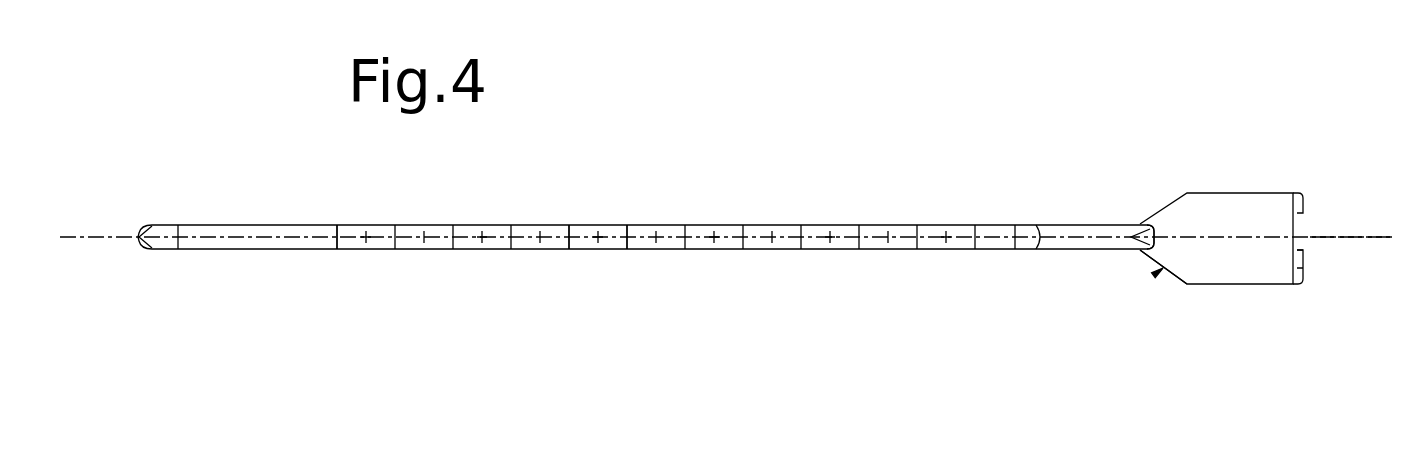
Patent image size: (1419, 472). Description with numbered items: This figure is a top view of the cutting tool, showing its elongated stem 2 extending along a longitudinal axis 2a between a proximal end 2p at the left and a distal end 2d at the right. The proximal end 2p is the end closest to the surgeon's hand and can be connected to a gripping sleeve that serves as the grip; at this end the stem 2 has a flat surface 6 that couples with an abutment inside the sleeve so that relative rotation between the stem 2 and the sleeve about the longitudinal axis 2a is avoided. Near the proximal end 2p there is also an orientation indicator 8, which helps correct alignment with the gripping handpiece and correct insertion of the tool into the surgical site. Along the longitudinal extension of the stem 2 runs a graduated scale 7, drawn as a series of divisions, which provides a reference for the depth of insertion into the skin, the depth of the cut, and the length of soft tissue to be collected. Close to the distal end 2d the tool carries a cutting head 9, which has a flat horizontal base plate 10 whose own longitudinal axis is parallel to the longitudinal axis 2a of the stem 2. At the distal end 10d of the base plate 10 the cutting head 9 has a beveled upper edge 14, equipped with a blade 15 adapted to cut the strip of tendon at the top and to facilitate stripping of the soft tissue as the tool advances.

The stem 2 is at (788, 226).
The proximal end 2p is at (141, 231).
The longitudinal axis 2a is at (1350, 236).
The distal end 2d is at (1140, 223).
The flat surface 6 is at (166, 237).
The graduated scale 7 is at (628, 237).
The orientation indicator 8 is at (317, 236).
The cutting head 9 is at (1163, 268).
The base plate 10 is at (1230, 208).
The distal end of the base plate 10d is at (1303, 250).
The beveled upper edge 14 is at (1304, 268).
The blade 15 is at (1298, 212).